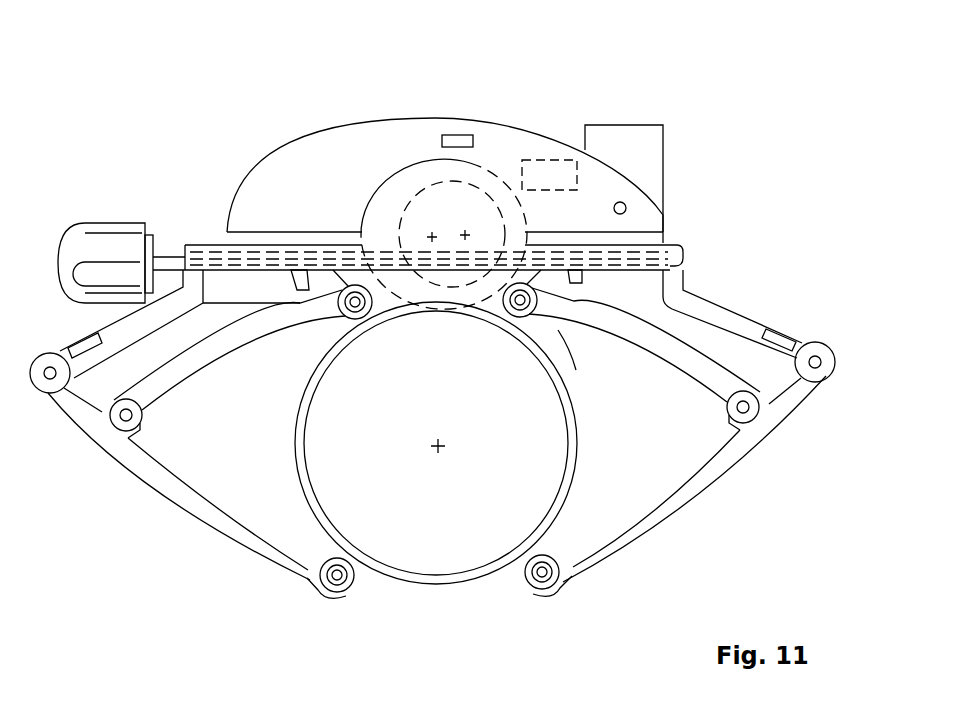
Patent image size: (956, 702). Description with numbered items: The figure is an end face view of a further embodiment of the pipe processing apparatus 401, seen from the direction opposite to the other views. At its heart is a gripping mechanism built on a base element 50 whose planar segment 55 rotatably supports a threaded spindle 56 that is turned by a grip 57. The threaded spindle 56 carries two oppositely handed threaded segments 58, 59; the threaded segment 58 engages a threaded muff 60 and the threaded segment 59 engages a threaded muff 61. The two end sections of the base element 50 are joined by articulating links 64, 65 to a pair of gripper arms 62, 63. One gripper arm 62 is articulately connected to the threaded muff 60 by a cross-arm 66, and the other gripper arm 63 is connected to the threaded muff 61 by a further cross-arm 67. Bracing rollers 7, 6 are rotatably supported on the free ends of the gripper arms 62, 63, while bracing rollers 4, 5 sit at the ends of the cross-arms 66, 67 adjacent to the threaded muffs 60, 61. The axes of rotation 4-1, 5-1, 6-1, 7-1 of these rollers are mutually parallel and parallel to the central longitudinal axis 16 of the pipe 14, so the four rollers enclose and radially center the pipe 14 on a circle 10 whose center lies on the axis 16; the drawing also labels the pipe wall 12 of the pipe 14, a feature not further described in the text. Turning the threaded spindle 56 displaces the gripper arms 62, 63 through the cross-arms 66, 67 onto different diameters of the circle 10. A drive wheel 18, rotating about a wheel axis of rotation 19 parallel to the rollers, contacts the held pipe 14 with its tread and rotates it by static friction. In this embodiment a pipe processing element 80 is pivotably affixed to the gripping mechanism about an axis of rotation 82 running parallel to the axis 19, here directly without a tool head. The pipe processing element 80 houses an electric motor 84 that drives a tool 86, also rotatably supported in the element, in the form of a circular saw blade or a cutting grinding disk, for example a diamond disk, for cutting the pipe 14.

The pipe processing apparatus 401 is at (619, 95).
The pipe processing element 80 is at (555, 143).
The electric motor 84 is at (538, 172).
The axis of rotation 82 is at (626, 205).
The tool 86 is at (395, 185).
The wheel axis of rotation 19 is at (463, 232).
The drive wheel 18 is at (480, 178).
The threaded segment 59 is at (312, 257).
The threaded spindle 56 is at (208, 258).
The grip 57 is at (80, 250).
The planar segment of the base element 55 is at (682, 245).
The threaded segment 58 is at (685, 266).
The base element 50 is at (720, 318).
The threaded muff 61 is at (289, 280).
The threaded muff 60 is at (583, 274).
The circle 10 is at (579, 467).
The pipe wall 12 is at (578, 452).
The pipe 14 is at (573, 397).
The central longitudinal axis 16 is at (441, 449).
The bracing roller 5 is at (343, 317).
The axis of rotation 5-1 is at (362, 312).
The bracing roller 4 is at (533, 315).
The axis of rotation 4-1 is at (510, 314).
The bracing roller 6 is at (348, 590).
The axis of rotation 6-1 is at (333, 578).
The bracing roller 7 is at (537, 587).
The axis of rotation 7-1 is at (557, 580).
The cross-arm 67 is at (202, 350).
The cross-arm 66 is at (640, 332).
The articulating link 65 is at (50, 377).
The articulating link 64 is at (817, 366).
The gripper arm 63 is at (203, 510).
The gripper arm 62 is at (670, 508).